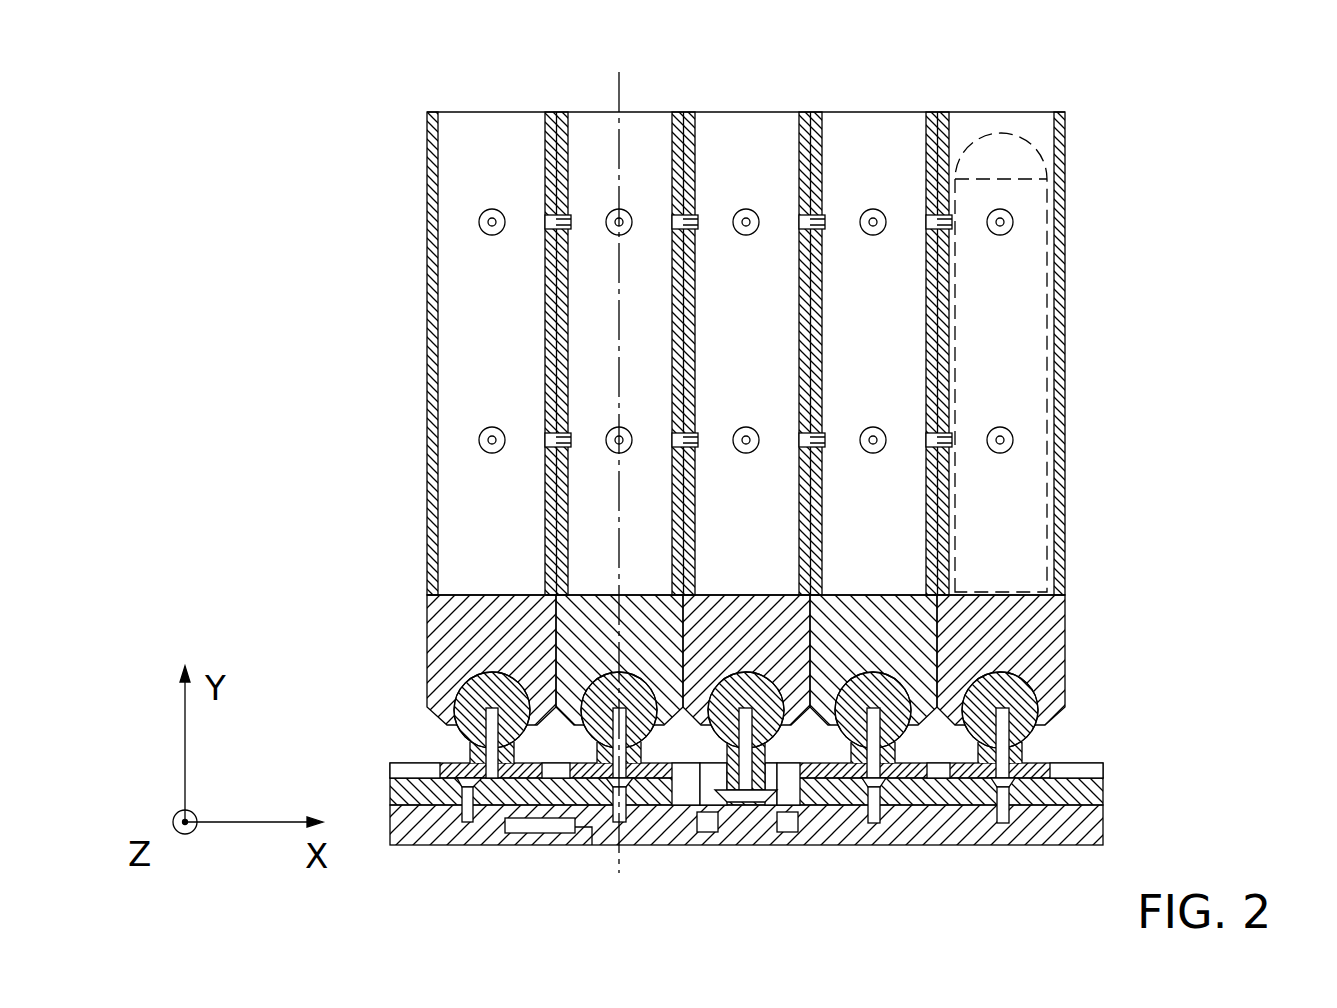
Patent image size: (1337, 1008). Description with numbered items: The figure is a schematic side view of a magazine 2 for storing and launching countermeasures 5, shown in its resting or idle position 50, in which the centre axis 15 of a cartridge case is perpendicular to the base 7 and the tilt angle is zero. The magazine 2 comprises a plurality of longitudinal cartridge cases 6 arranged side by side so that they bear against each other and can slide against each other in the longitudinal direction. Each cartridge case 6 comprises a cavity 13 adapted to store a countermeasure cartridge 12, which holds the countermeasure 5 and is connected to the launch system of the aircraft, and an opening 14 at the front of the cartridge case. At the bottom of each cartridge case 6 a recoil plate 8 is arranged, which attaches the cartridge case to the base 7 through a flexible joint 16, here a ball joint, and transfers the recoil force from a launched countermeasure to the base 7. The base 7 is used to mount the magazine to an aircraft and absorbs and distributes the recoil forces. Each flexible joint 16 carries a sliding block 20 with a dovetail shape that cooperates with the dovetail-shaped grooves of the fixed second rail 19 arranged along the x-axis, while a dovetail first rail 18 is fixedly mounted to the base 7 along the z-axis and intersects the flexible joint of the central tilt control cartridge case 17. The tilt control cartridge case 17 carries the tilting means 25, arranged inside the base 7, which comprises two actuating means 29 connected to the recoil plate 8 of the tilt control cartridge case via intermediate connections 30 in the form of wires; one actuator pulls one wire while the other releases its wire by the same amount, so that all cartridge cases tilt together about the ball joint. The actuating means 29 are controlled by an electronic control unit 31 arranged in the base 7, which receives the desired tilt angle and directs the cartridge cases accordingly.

The magazine 2 is at (1085, 170).
The countermeasure 5 is at (1022, 207).
The cartridge case 6 is at (1067, 378).
The base 7 is at (748, 867).
The recoil plate 8 is at (1000, 640).
The countermeasure cartridge 12 is at (1022, 233).
The cavity 13 is at (895, 150).
The opening 14 is at (867, 108).
The centre axis 15 is at (619, 92).
The flexible joint 16 is at (847, 770).
The tilt control cartridge case 17 is at (752, 95).
The first rail 18 is at (728, 795).
The fixed second rail 19 is at (997, 795).
The sliding block 20 is at (1053, 765).
The tilting means 25 is at (792, 740).
The actuating means 29 is at (709, 832).
The intermediate connection 30 is at (700, 740).
The electronic control unit 31 is at (540, 840).
The resting position 50 is at (1200, 170).